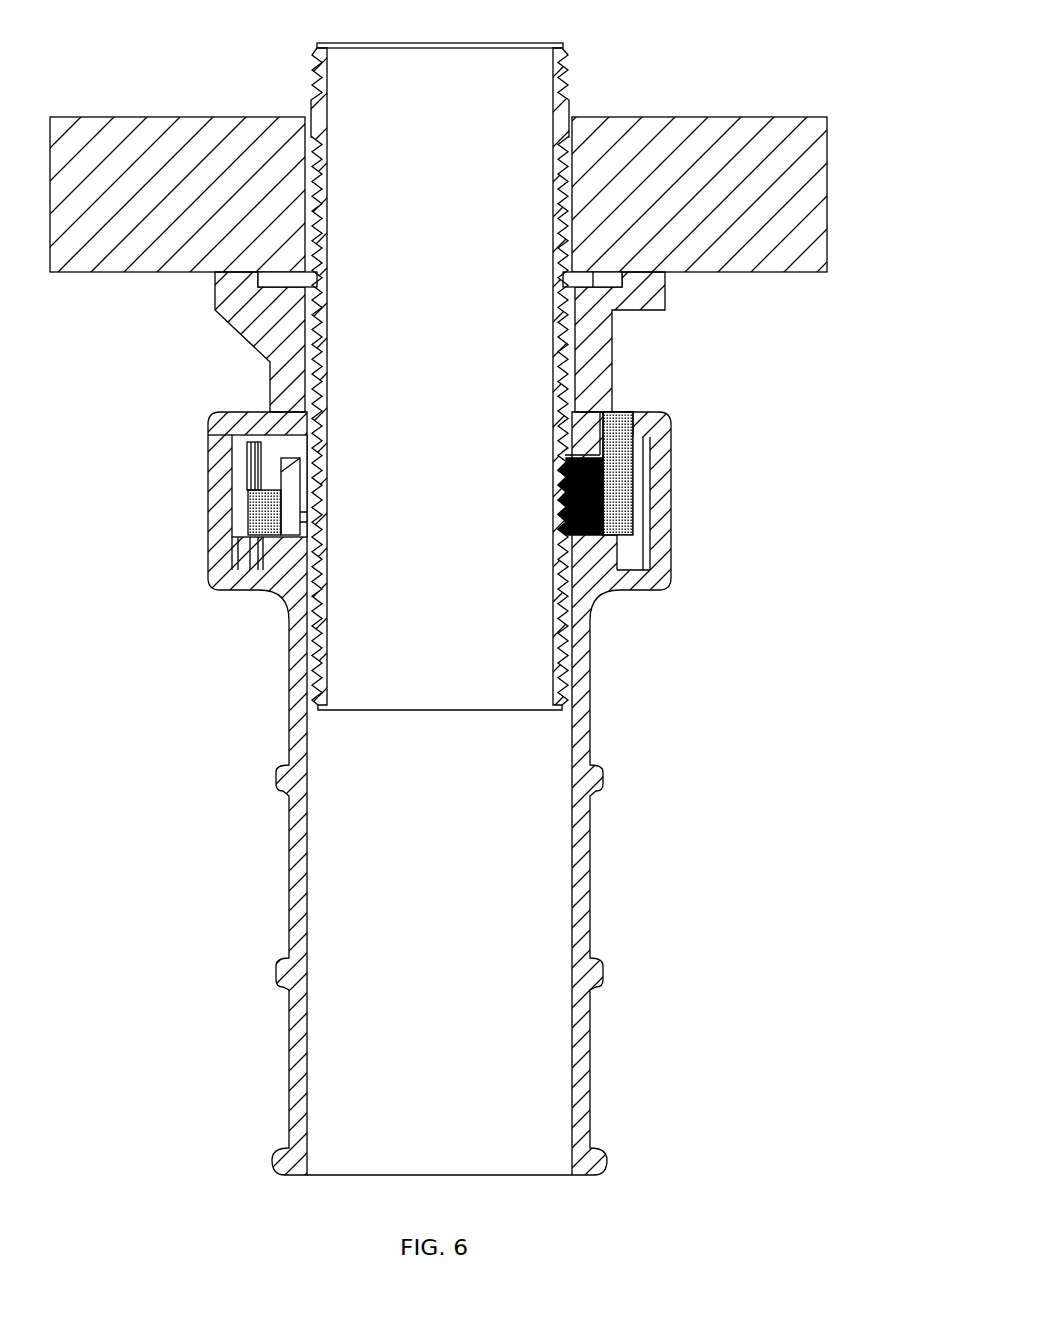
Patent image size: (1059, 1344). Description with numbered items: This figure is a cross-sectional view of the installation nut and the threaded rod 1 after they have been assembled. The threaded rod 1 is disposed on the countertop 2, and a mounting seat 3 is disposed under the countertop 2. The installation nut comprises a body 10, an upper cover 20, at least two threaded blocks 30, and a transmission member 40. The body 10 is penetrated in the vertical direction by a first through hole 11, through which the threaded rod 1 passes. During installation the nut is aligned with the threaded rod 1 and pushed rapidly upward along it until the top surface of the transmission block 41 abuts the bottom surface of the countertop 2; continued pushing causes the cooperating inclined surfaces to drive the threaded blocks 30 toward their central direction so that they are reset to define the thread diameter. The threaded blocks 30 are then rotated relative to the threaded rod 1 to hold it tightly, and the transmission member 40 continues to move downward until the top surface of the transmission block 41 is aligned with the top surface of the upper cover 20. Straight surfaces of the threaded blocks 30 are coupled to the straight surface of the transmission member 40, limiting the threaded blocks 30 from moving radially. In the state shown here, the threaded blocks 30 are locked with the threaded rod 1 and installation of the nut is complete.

The threaded rod 1 is at (565, 82).
The countertop 2 is at (798, 235).
The mounting seat 3 is at (653, 298).
The body 10 is at (585, 930).
The first through hole 11 is at (522, 1048).
The upper cover 20 is at (212, 441).
The threaded blocks 30 is at (598, 533).
The transmission member 40 is at (633, 508).
The transmission block 41 is at (657, 437).